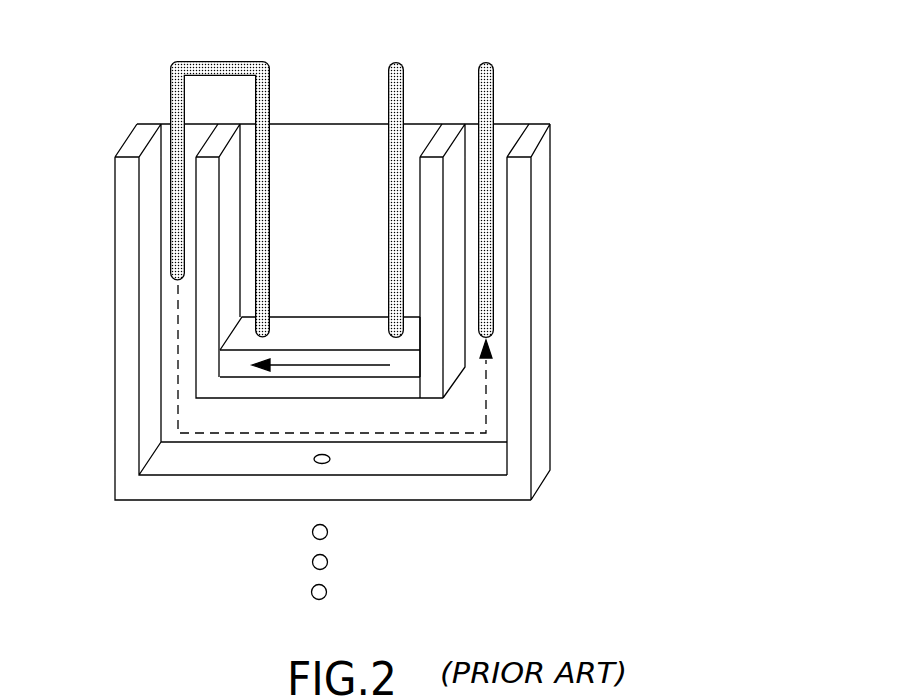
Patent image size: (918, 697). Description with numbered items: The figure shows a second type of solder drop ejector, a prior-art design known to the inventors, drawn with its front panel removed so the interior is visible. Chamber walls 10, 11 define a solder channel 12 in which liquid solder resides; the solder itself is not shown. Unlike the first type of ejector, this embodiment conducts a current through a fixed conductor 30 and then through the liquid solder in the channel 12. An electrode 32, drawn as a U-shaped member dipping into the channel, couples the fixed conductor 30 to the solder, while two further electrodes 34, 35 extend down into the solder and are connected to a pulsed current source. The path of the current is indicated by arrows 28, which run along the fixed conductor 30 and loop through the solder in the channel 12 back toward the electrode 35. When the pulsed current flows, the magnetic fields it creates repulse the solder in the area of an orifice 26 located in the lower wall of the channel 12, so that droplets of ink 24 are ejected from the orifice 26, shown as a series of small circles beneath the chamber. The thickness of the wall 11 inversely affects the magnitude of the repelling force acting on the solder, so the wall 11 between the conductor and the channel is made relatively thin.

The chamber wall 10 is at (518, 180).
The chamber wall 11 is at (396, 388).
The solder channel 12 is at (510, 133).
The droplets of ink 24 is at (327, 592).
The orifice 26 is at (330, 459).
The arrows 28 is at (264, 359).
The fixed conductor 30 is at (367, 330).
The electrode 32 is at (170, 95).
The electrode 34 is at (389, 93).
The electrode 35 is at (478, 93).